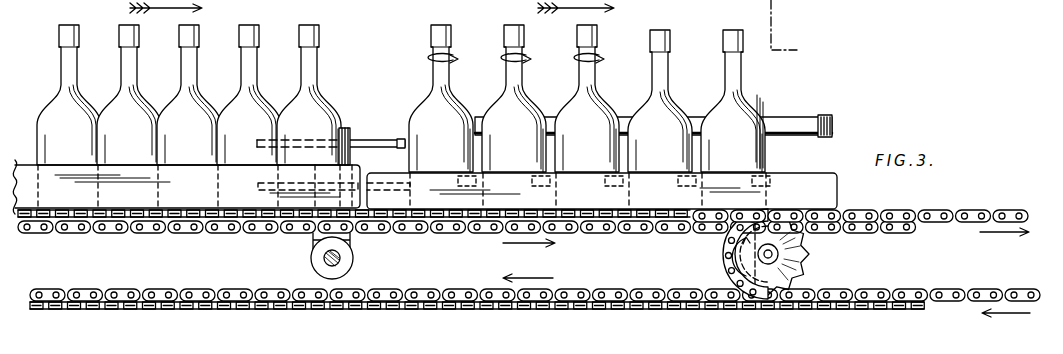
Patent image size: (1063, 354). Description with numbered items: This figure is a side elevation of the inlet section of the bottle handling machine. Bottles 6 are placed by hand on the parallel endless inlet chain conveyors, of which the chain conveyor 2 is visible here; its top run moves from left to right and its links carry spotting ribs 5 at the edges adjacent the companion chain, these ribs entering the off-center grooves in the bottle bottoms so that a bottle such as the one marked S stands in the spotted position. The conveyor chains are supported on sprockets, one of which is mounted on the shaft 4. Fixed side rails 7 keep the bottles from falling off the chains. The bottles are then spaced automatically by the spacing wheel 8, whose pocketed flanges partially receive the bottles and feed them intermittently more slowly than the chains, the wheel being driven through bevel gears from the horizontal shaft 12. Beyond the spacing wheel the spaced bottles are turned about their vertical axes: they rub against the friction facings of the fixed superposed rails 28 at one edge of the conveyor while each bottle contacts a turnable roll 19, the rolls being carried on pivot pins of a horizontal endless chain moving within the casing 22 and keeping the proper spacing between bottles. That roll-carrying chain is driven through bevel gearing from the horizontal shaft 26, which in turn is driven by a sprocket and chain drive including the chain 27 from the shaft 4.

The endless chain conveyor 2 is at (45, 233).
The shaft 4 is at (792, 31).
The spotting ribs 5 is at (672, 212).
The bottles 6 is at (96, 92).
The fixed side rails 7 is at (184, 180).
The spacing wheel 8 is at (363, 142).
The horizontal shaft 12 is at (350, 251).
The turnable rolls 19 is at (548, 178).
The casing 22 is at (832, 198).
The horizontal shaft 26 is at (778, 256).
The chain 27 is at (962, 211).
The fixed superposed rails 28 is at (830, 116).
The spotted position S is at (765, 101).